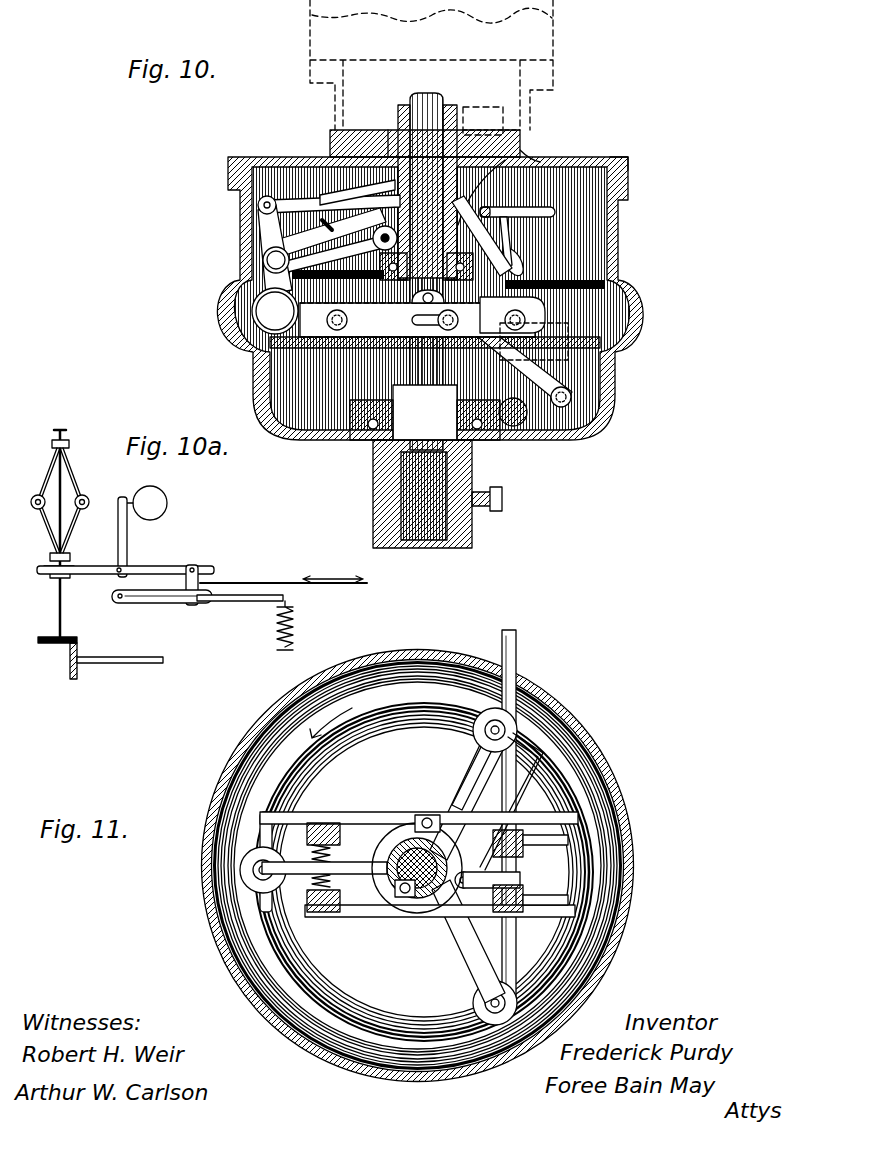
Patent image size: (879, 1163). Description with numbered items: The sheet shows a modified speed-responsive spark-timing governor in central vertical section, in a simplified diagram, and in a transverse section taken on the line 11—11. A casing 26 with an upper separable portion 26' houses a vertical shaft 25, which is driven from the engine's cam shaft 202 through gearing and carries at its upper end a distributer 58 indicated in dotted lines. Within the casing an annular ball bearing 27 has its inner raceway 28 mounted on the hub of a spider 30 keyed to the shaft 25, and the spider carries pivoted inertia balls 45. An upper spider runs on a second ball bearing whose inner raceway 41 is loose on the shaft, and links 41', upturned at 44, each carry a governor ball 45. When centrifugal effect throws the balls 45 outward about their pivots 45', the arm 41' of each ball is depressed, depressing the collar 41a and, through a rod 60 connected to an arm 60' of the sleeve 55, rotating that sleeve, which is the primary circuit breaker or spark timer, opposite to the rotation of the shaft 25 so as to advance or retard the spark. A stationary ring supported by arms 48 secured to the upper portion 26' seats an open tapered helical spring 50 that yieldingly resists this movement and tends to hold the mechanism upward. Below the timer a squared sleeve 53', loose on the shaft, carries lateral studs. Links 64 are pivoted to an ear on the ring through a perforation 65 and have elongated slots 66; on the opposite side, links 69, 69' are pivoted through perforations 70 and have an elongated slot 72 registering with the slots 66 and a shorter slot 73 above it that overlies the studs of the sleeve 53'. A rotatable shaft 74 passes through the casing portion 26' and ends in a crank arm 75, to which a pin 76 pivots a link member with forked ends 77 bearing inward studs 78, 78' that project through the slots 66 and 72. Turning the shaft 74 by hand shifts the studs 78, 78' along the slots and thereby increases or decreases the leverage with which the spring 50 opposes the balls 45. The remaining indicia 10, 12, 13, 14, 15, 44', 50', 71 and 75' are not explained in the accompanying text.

In FIG. 11, the section line 10 is at (645, 876).
In FIG. 10, the section line 11 is at (168, 302).
In FIG. 10, the section line / table 12 is at (695, 310).
In FIG. 10, the section line 13 is at (632, 392).
In FIG. 10, the section line 14 is at (310, 446).
In FIG. 10, the roller 15 is at (252, 325).
In FIG. 10, the shaft 25 is at (438, 93).
In FIG. 10A, the shaft 25 is at (68, 606).
In FIG. 11, the shaft 25 is at (370, 874).
In FIG. 10, the casing 26 is at (438, 272).
In FIG. 11, the casing 26 is at (418, 866).
In FIG. 10, the upper separable portion of the casing 26' is at (637, 155).
In FIG. 10, the annular ball bearing 27 is at (460, 440).
In FIG. 10, the inner raceway 28 is at (380, 455).
In FIG. 10, the spider 30 is at (388, 130).
In FIG. 11, the inner raceway 41 is at (468, 941).
In FIG. 10, the link 41' is at (390, 174).
In FIG. 11, the link 41' is at (507, 885).
In FIG. 10, the collar 41a is at (540, 160).
In FIG. 10, the upturned portion of link 44 is at (348, 227).
In FIG. 10, the lever arm 44' is at (226, 245).
In FIG. 11, the lever arm 44' is at (365, 781).
In FIG. 10A, the inertia ball 45 is at (66, 500).
In FIG. 11, the inertia ball 45 is at (374, 850).
In FIG. 10, the pivot 45' is at (365, 254).
In FIG. 11, the pivot 45' is at (304, 947).
In FIG. 10, the arm 48 is at (560, 385).
In FIG. 11, the arm 48 is at (560, 842).
In FIG. 10A, the helical spring 50 is at (298, 625).
In FIG. 11, the helical spring 50 is at (323, 843).
In FIG. 11, the spring 50' is at (316, 933).
In FIG. 10, the squared sleeve 53' is at (511, 236).
In FIG. 10, the sleeve 55 is at (520, 135).
In FIG. 11, the sleeve 55 is at (395, 830).
In FIG. 10, the distributer 58 is at (553, 45).
In FIG. 10A, the distributer 58 is at (167, 503).
In FIG. 10, the rod 60 is at (448, 194).
In FIG. 10A, the rod 60 is at (125, 537).
In FIG. 11, the rod 60 is at (422, 881).
In FIG. 11, the arm of the sleeve 60' is at (444, 871).
In FIG. 10, the link 64 is at (510, 245).
In FIG. 10A, the link 64 is at (185, 566).
In FIG. 11, the link 64 is at (505, 742).
In FIG. 10, the perforation 65 is at (525, 322).
In FIG. 11, the perforation 65 is at (560, 878).
In FIG. 10A, the elongated slot 66 is at (165, 566).
In FIG. 10A, the link 69 is at (237, 612).
In FIG. 11, the link 69 is at (362, 945).
In FIG. 11, the link 69' is at (361, 774).
In FIG. 10, the perforation 70 is at (383, 352).
In FIG. 10A, the perforation 70 is at (205, 570).
In FIG. 10, the pipe 71 is at (330, 232).
In FIG. 11, the pipe 71 is at (516, 640).
In FIG. 10A, the elongated slot 72 is at (155, 603).
In FIG. 10, the slot 73 is at (435, 240).
In FIG. 10, the rotatable shaft 74 is at (498, 440).
In FIG. 10A, the rotatable shaft 74 is at (345, 590).
In FIG. 10, the crank arm 75 is at (555, 416).
In FIG. 11, the crank arm 75 is at (586, 852).
In FIG. 10, the roller pin 75' is at (562, 453).
In FIG. 10, the pin 76 is at (345, 350).
In FIG. 10, the forked end of link member 77 is at (450, 360).
In FIG. 11, the forked end of link member 77 is at (568, 838).
In FIG. 10A, the stud 78 is at (209, 568).
In FIG. 11, the stud 78' is at (422, 878).
In FIG. 10A, the cam shaft 202 is at (140, 663).